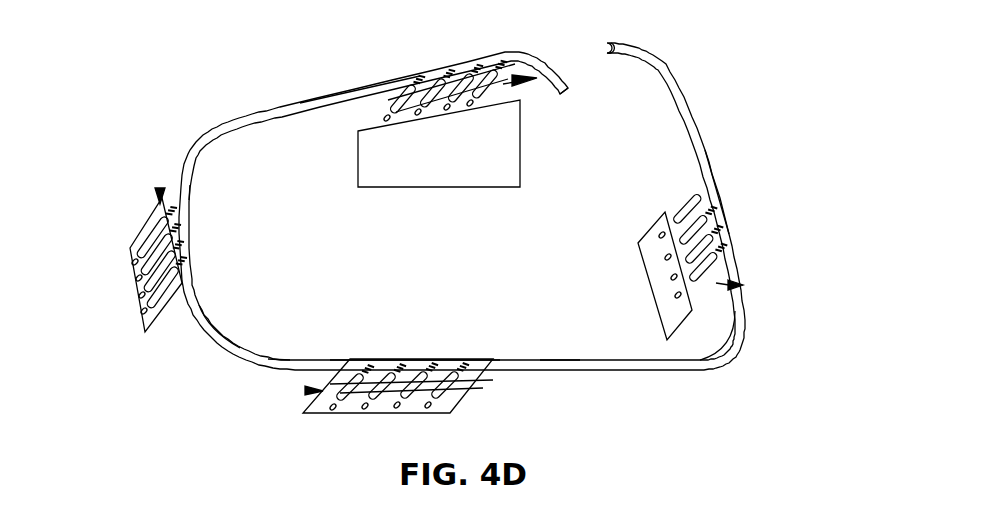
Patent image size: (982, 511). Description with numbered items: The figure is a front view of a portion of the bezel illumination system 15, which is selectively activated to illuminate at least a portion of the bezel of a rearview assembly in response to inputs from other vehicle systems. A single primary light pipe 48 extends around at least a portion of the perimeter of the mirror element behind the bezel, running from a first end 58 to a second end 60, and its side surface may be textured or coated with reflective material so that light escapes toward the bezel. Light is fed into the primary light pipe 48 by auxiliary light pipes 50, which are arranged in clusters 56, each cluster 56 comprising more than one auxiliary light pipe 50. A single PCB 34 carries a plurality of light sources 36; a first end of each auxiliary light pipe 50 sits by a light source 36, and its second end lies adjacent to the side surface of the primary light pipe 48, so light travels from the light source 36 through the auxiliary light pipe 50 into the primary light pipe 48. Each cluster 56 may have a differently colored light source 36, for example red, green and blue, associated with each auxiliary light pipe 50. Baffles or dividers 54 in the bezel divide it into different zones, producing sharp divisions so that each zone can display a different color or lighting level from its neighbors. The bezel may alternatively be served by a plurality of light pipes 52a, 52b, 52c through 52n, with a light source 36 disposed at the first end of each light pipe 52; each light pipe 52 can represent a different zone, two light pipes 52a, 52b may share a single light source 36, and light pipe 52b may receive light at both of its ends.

The bezel illumination system 15 is at (185, 82).
The PCB 34 is at (134, 240).
The light source 36 is at (142, 311).
The primary light pipe 48 is at (742, 330).
The auxiliary light pipe 50 is at (156, 214).
The light pipe 52 is at (283, 110).
The light pipe 52a is at (362, 87).
The light pipe 52b is at (221, 338).
The light pipe 52c is at (478, 360).
The light pipe 52n is at (712, 164).
The baffles or dividers 54 is at (198, 153).
The cluster 56 is at (160, 188).
The first end 58 is at (612, 44).
The second end 60 is at (560, 95).